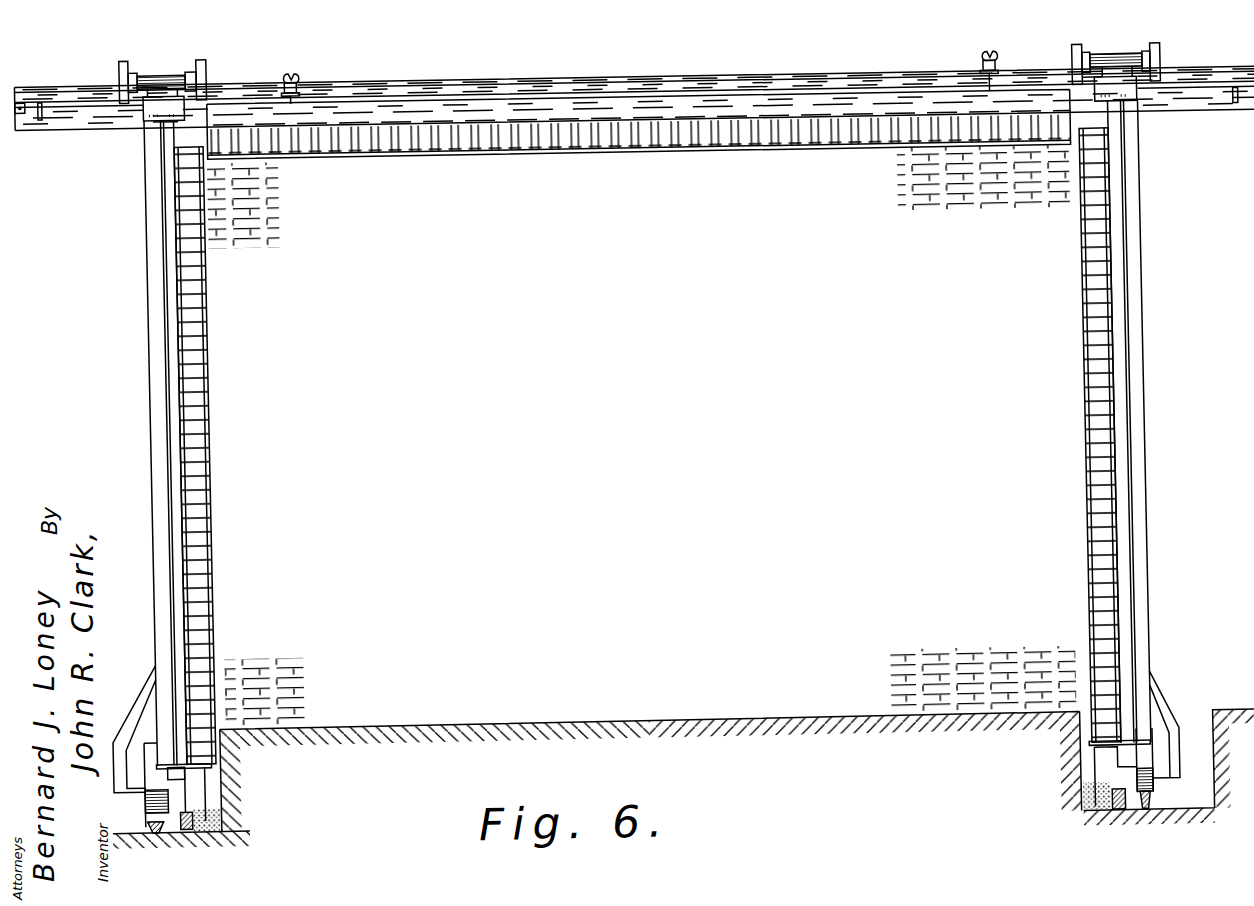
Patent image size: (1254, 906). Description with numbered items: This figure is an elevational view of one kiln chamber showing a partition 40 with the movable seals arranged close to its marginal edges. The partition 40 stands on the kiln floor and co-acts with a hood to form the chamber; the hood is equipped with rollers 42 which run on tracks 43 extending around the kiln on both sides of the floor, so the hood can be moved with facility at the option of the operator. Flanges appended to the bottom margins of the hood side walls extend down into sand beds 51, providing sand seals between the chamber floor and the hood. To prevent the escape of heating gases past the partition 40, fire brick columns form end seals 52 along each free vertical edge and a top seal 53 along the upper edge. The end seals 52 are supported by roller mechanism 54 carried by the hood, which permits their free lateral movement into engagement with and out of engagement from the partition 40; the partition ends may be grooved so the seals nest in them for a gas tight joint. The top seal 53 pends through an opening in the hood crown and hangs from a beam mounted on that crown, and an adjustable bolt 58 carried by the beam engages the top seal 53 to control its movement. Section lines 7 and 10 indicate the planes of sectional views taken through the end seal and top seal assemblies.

The section line 7- 7 is at (1202, 175).
The section line 10- 10 is at (320, 166).
The partition 40 is at (1005, 194).
The roller 42 is at (150, 828).
The track 43 is at (196, 818).
The sand bed 51 is at (210, 806).
The end seal 52 is at (198, 446).
The top seal 53 is at (718, 145).
The roller mechanism 54 is at (175, 58).
The adjustable bolt 58 is at (294, 69).